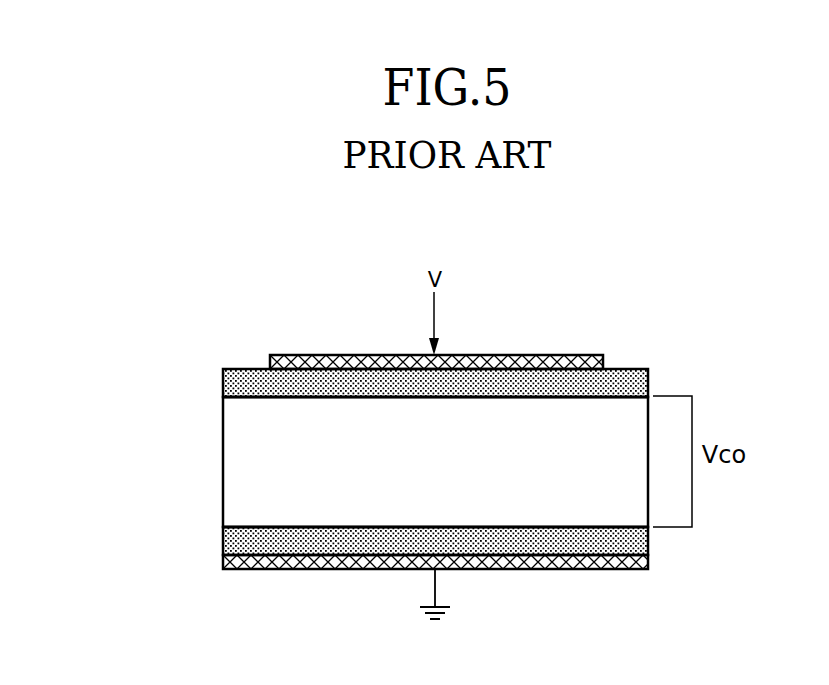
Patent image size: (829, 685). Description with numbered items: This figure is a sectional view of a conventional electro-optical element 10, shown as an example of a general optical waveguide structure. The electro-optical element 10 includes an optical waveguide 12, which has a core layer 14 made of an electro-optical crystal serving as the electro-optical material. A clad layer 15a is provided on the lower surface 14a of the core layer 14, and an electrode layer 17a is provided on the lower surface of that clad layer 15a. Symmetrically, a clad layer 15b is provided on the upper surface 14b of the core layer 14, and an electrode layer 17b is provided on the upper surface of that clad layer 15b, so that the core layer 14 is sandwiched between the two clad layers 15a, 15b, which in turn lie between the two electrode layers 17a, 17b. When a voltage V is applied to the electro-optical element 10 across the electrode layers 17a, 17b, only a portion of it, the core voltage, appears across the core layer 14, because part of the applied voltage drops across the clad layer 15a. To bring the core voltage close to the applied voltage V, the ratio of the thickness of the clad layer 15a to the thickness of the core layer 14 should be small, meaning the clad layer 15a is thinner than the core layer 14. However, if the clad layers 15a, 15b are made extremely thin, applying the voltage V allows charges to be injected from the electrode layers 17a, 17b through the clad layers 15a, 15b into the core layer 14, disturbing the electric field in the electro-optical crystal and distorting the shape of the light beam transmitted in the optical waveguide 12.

The electro-optical element 10 is at (688, 276).
The optical waveguide 12 is at (196, 489).
The core layer 14 is at (223, 451).
The lower surface of the core layer 14a is at (478, 527).
The upper surface of the core layer 14b is at (492, 397).
The clad layer 15a is at (273, 538).
The clad layer 15b is at (288, 387).
The electrode layer 17a is at (335, 570).
The electrode layer 17b is at (348, 355).